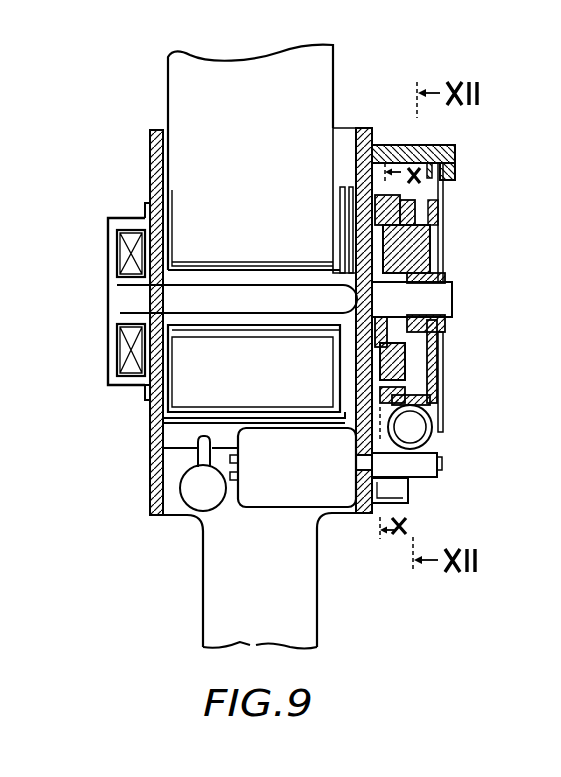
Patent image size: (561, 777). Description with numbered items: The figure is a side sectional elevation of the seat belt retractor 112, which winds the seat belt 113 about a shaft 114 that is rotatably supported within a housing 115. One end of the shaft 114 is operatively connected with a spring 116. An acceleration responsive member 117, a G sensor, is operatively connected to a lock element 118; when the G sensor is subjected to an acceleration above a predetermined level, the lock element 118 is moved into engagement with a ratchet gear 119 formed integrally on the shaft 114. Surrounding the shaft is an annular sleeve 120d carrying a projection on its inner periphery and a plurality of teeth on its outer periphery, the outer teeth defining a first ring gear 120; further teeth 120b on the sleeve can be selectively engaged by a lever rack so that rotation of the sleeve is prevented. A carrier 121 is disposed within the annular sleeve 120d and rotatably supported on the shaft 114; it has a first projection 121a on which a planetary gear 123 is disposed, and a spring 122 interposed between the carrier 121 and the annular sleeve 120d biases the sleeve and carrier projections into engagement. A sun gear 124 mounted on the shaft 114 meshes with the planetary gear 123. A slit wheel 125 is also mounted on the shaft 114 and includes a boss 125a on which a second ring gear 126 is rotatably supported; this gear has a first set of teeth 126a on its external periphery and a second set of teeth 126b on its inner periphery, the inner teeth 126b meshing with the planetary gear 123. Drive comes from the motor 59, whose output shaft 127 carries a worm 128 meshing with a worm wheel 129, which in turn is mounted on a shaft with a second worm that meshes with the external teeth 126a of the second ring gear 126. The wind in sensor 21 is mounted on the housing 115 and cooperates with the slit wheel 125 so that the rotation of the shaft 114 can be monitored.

The wind in sensor 21 is at (443, 145).
The motor 59 is at (323, 495).
The seat belt retractor 112 is at (361, 86).
The seat belt 113 is at (335, 55).
The shaft 114 is at (455, 290).
The housing 115 is at (155, 130).
The spring 116 is at (110, 338).
The acceleration responsive member 117 is at (203, 458).
The lock element 118 is at (175, 437).
The ratchet gear 119 is at (348, 186).
The first ring gear 120 is at (426, 178).
The teeth 120b is at (376, 202).
The annular sleeve 120d is at (400, 385).
The carrier 121 is at (407, 362).
The first projection 121a is at (421, 242).
The spring 122 is at (433, 223).
The planetary gear 123 is at (420, 214).
The sun gear 124 is at (413, 299).
The slit wheel 125 is at (443, 253).
The boss 125a is at (447, 320).
The second ring gear 126 is at (442, 390).
The first set of teeth 126a is at (437, 420).
The second set of teeth 126b is at (400, 194).
The output shaft 127 is at (443, 467).
The worm 128 is at (435, 482).
The worm wheel 129 is at (437, 437).